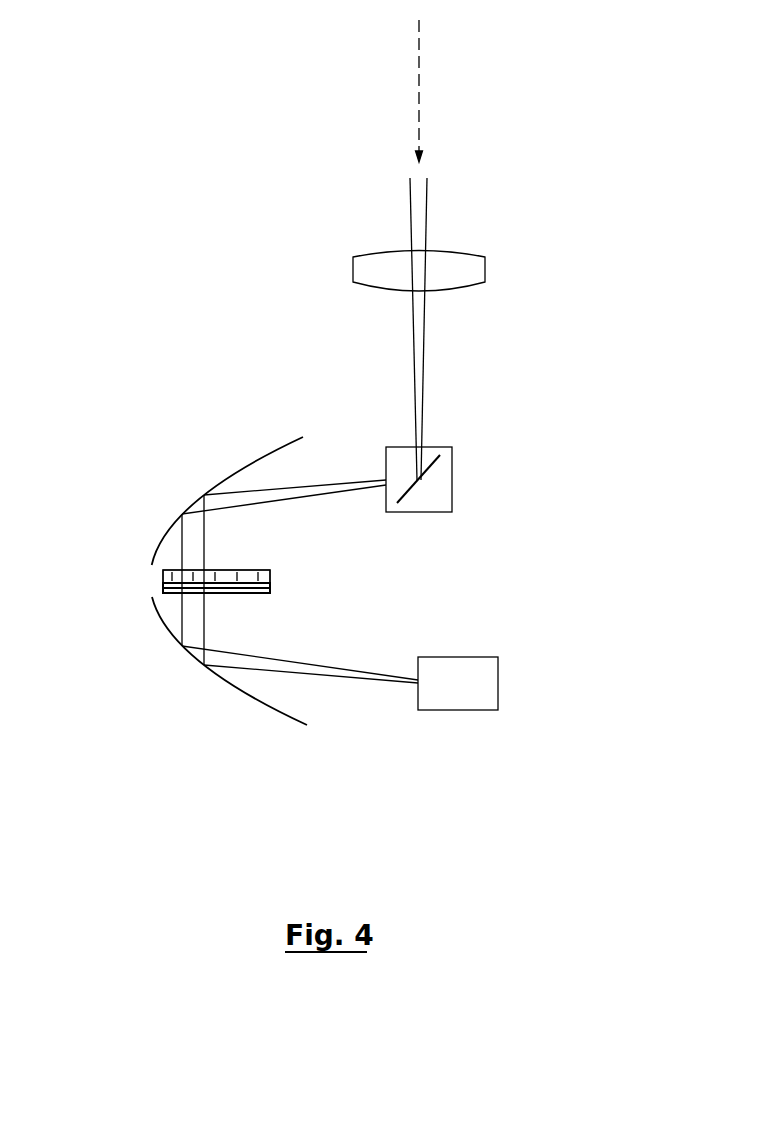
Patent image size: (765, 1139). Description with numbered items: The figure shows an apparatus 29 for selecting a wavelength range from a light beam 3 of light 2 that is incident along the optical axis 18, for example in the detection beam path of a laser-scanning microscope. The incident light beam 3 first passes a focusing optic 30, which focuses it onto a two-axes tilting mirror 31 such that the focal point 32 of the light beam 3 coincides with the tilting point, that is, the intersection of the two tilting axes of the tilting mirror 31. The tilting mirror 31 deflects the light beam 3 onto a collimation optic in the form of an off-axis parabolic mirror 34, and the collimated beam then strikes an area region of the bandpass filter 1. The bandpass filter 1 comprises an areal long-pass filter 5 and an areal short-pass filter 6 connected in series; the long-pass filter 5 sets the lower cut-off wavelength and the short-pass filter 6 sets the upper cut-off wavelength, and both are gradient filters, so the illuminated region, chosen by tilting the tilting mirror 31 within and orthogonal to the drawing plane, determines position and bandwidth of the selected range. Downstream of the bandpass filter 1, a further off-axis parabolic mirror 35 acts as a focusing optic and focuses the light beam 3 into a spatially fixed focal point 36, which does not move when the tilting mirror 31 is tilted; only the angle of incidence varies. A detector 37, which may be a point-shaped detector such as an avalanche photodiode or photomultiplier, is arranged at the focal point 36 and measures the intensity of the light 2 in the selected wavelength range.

The bandpass filter 1 is at (159, 580).
The light 2 is at (421, 172).
The light beam 3 is at (255, 668).
The long-pass filter 5 is at (272, 572).
The short-pass filter 6 is at (272, 590).
The optical axis 18 is at (419, 72).
The apparatus 29 is at (172, 170).
The focusing optic 30 is at (488, 265).
The two-axes tilting mirror 31 is at (454, 478).
The focal point 32 is at (410, 472).
The off-axis parabolic mirror 34 is at (195, 492).
The further off-axis parabolic mirror 35 is at (185, 665).
The spatially fixed focal point 36 is at (415, 690).
The detector 37 is at (500, 682).